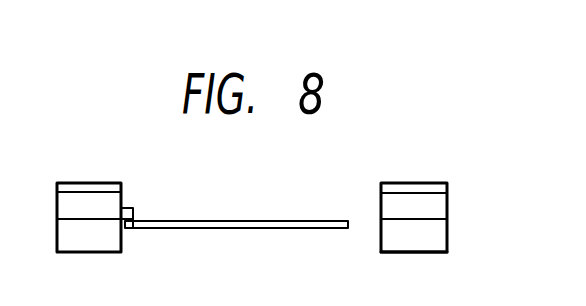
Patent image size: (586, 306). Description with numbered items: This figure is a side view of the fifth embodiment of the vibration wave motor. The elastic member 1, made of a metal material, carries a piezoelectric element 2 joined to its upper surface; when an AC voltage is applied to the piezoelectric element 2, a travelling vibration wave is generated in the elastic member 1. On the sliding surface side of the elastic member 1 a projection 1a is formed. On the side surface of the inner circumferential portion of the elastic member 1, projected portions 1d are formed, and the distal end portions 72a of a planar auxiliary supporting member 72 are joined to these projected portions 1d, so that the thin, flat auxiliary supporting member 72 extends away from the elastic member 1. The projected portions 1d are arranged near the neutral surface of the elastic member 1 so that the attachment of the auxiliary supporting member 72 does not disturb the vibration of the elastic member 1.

The elastic member 1 is at (438, 210).
The projection 1a is at (432, 245).
The projected portions 1d is at (133, 210).
The piezoelectric element 2 is at (435, 188).
The planar auxiliary supporting member 72 is at (320, 229).
The distal end portions 72a is at (127, 225).